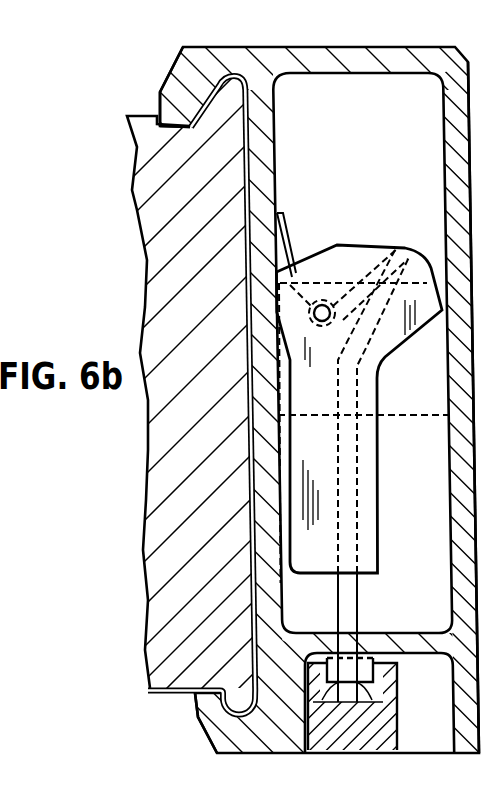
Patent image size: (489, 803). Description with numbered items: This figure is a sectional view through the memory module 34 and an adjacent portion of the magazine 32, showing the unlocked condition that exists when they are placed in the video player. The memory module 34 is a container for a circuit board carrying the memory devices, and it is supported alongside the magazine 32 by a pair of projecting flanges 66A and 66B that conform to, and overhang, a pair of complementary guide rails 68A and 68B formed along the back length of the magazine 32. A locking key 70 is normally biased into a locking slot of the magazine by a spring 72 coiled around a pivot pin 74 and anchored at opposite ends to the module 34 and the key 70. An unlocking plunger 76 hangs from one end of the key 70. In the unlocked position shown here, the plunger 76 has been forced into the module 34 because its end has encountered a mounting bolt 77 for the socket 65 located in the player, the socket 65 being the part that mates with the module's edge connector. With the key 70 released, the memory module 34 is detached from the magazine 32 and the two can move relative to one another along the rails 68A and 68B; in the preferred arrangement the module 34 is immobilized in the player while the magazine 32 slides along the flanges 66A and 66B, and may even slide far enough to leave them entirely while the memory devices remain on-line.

The magazine 32 is at (199, 688).
The memory module 34 is at (453, 446).
The socket 65 is at (382, 717).
The projecting flange 66A is at (183, 65).
The projecting flange 66B is at (197, 724).
The guide rail 68A is at (178, 97).
The guide rail 68B is at (228, 693).
The locking key 70 is at (375, 528).
The spring 72 is at (285, 221).
The pivot pin 74 is at (323, 305).
The unlocking plunger 76 is at (358, 595).
The mounting bolt 77 is at (396, 678).